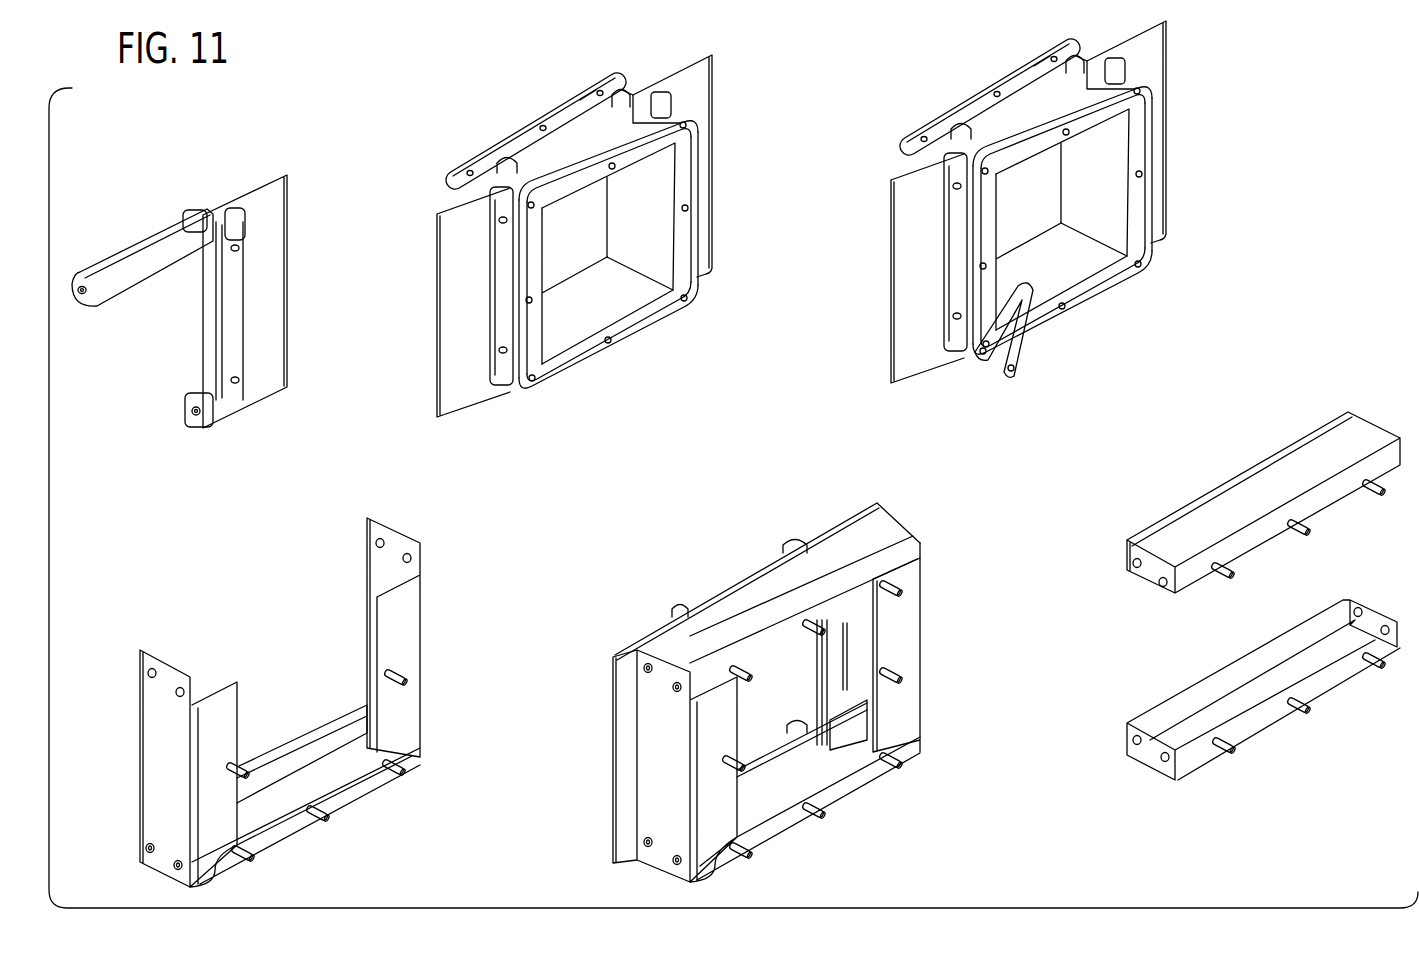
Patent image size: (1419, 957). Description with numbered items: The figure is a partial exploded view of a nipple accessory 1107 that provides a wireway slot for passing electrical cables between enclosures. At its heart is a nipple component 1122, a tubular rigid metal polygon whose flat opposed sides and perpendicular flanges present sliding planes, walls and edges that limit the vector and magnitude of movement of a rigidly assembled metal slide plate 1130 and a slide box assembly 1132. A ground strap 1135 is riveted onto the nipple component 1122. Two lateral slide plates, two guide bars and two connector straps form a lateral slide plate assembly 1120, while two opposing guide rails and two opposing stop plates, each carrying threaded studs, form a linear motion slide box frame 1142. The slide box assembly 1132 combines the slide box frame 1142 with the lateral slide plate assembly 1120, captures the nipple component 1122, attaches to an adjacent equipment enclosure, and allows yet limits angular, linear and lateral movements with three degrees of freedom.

The nipple accessory 1107 is at (673, 450).
The lateral slide plate assembly 1120 is at (545, 163).
The nipple component 1122 is at (603, 303).
The rigidly assembled metal slide plate 1130 is at (975, 72).
The slide box assembly 1132 is at (692, 638).
The ground strap 1135 is at (1022, 350).
The linear motion slide box frame 1142 is at (790, 682).